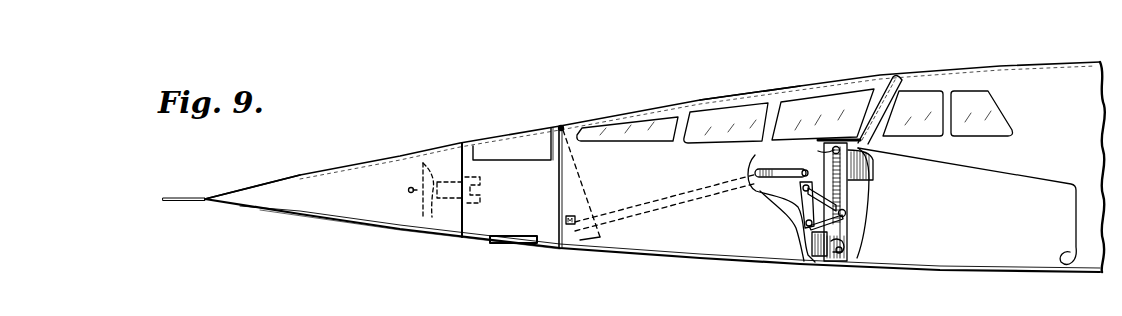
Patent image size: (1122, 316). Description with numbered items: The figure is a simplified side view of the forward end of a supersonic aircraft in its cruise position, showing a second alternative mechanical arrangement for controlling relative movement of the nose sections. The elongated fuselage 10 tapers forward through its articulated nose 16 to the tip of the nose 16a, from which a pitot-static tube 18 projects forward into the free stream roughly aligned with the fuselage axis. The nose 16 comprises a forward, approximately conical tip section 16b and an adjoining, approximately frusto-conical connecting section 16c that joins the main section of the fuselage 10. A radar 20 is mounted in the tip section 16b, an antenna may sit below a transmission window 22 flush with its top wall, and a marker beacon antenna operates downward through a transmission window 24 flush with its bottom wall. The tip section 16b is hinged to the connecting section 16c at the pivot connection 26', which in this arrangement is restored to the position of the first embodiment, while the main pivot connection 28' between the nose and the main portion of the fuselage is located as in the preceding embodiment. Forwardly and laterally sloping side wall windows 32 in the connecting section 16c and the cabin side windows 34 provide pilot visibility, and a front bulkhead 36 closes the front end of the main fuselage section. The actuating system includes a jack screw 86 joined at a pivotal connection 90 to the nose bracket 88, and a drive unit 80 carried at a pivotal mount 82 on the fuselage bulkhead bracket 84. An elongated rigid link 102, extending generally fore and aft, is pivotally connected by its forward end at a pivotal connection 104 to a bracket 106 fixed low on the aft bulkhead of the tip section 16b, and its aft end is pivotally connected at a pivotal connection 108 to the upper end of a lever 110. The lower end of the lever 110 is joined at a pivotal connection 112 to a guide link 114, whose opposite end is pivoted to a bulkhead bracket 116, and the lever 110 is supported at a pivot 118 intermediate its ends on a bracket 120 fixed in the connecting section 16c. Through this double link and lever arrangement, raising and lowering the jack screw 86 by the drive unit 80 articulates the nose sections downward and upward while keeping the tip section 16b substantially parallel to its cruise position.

The fuselage 10 is at (1017, 66).
The nose 16 is at (569, 95).
The tip of the nose 16a is at (212, 197).
The tip section 16b is at (464, 143).
The connecting section 16c is at (703, 97).
The pitot-static tube 18 is at (178, 197).
The radar 20 is at (432, 217).
The transmission window 22 is at (511, 136).
The transmission window 24 is at (512, 247).
The pivot connection 26' is at (580, 170).
The main pivot connection 28' is at (976, 226).
The side wall windows 32 is at (808, 101).
The cabin side windows 34 is at (966, 99).
The front bulkhead 36 is at (849, 138).
The drive unit 80 is at (827, 253).
The pivotal mount 82 is at (840, 257).
The fuselage bulkhead bracket 84 is at (848, 242).
The jack screw 86 is at (862, 174).
The nose bracket 88 is at (834, 147).
The pivotal connection 90 is at (818, 151).
The rigid link 102 is at (630, 215).
The pivotal connection 104 is at (580, 240).
The bracket 106 is at (567, 216).
The pivotal connection 108 is at (758, 173).
The lever 110 is at (803, 237).
The pivotal connection 112 is at (806, 230).
The guide link 114 is at (816, 238).
The bulkhead bracket 116 is at (848, 202).
The pivot 118 is at (802, 208).
The bracket 120 is at (796, 186).